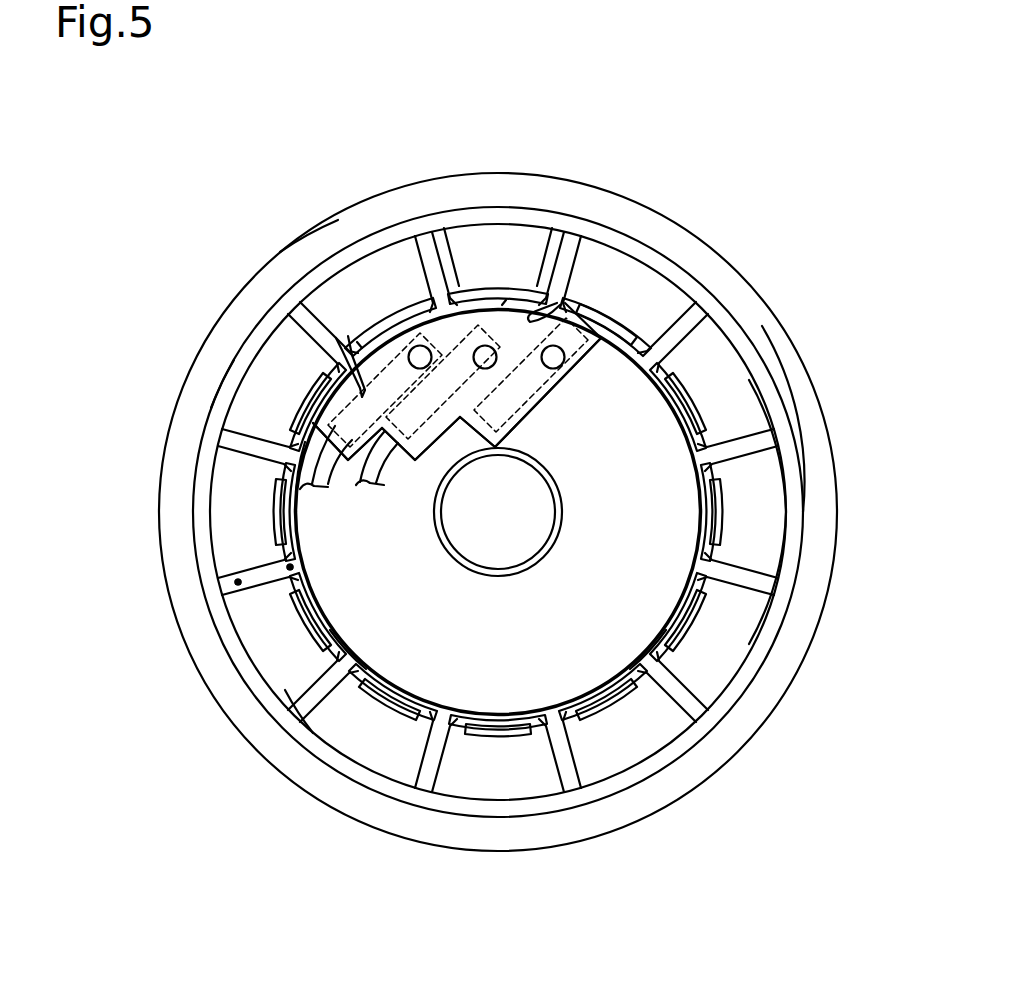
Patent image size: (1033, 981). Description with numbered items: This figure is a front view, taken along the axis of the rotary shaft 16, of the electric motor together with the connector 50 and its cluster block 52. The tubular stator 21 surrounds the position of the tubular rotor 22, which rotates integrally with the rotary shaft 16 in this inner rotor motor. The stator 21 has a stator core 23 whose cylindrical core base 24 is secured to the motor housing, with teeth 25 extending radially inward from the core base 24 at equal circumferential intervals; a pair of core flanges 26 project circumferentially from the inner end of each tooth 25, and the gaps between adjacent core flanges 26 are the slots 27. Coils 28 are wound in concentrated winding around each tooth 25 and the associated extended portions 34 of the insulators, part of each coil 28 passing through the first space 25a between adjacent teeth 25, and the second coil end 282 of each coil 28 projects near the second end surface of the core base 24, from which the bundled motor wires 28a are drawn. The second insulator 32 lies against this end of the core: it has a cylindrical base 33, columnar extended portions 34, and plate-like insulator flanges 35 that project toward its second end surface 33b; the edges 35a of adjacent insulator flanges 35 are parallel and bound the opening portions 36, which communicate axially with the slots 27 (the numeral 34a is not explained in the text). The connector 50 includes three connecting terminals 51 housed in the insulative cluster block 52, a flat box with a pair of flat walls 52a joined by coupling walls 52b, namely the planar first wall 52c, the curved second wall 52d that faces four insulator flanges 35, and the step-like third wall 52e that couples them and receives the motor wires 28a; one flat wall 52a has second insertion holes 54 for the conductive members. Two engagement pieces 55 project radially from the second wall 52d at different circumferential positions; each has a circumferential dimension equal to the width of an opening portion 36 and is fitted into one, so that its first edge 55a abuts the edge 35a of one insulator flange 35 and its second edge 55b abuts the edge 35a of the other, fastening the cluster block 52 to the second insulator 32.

The rotary shaft 16 is at (518, 571).
The stator 21 is at (745, 766).
The rotor 22 is at (557, 718).
The stator core 23 is at (283, 256).
The core base 24 is at (217, 323).
The teeth 25 is at (672, 375).
The first space 25a is at (238, 582).
The core flanges 26 is at (272, 547).
The slots 27 is at (293, 567).
The coils 28 is at (840, 462).
The motor wire 28a is at (312, 487).
The second coil end 282 is at (270, 705).
The second insulator 32 is at (208, 412).
The base 33 is at (220, 455).
The second end surface 33b is at (742, 335).
The extended portions 34 is at (385, 745).
The insulator end 34a is at (238, 582).
The insulator flanges 35 is at (290, 510).
The edges 35a is at (437, 366).
The opening portions 36 is at (290, 567).
The connector 50 is at (492, 319).
The connecting terminals 51 is at (417, 330).
The cluster block 52 is at (478, 319).
The flat walls 52a is at (545, 400).
The coupling walls 52b is at (474, 319).
The first wall 52c is at (550, 392).
The second wall 52d is at (490, 305).
The third wall 52e is at (484, 452).
The second insertion holes 54 is at (483, 366).
The engagement pieces 55 is at (449, 270).
The first edge 55a is at (358, 338).
The second edge 55b is at (533, 300).